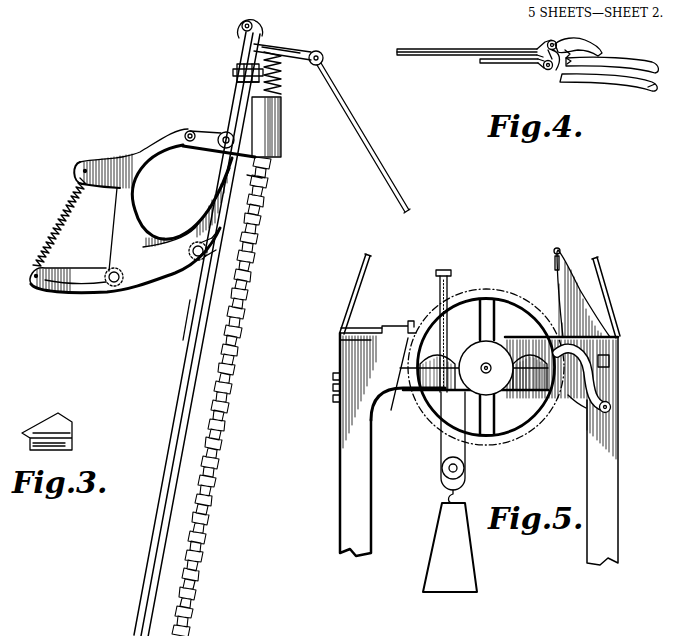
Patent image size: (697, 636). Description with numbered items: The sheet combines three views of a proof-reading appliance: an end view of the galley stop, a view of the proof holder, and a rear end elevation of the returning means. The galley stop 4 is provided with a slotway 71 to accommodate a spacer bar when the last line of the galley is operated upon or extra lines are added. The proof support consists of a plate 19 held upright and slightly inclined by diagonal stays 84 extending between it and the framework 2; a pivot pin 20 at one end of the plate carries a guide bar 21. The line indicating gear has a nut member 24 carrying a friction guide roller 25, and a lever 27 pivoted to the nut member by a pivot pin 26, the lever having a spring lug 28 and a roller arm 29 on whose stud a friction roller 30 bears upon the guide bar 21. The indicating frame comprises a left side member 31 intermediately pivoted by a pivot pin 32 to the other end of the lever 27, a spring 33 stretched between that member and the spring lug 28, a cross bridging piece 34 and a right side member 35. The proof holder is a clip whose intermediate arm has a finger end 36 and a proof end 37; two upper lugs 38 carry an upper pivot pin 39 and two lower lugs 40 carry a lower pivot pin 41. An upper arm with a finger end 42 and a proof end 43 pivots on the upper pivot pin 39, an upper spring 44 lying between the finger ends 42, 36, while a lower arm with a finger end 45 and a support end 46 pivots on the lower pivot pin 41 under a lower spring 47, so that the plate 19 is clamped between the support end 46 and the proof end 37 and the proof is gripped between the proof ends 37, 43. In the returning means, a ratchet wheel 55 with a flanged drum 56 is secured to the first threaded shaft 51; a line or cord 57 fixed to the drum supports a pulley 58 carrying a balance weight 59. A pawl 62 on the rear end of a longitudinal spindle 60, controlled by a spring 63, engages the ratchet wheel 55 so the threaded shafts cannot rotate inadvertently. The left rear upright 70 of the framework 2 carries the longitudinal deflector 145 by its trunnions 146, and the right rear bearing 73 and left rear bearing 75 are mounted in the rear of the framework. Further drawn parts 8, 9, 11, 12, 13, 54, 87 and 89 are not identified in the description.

In FIG. 5, the framework 2 is at (475, 449).
In FIG. 3, the galley stop 4 is at (40, 438).
In FIG. 5, the galley stop 4 is at (395, 327).
In FIG. 3, the arm 8 is at (287, 60).
In FIG. 5, the bracket 9 is at (340, 333).
In FIG. 5, the plate 11 is at (340, 342).
In FIG. 5, the top plate 12 is at (368, 328).
In FIG. 5, the cam 13 is at (428, 374).
In FIG. 3, the plate 19 is at (228, 221).
In FIG. 3, the pivot pin 20 is at (242, 26).
In FIG. 3, the guide bar 21 is at (196, 332).
In FIG. 3, the nut member 24 is at (282, 147).
In FIG. 3, the friction guide roller 25 is at (222, 134).
In FIG. 3, the pivot pin 26 is at (186, 133).
In FIG. 3, the lever 27 is at (153, 156).
In FIG. 3, the spring lug 28 is at (90, 166).
In FIG. 3, the roller arm 29 is at (143, 247).
In FIG. 3, the friction roller 30 is at (197, 258).
In FIG. 3, the left side member 31 is at (68, 292).
In FIG. 3, the pivot pin 32 is at (113, 286).
In FIG. 3, the spring 33 is at (65, 227).
In FIG. 3, the cross bridging piece 34 is at (247, 178).
In FIG. 3, the right side member 35 is at (205, 236).
In FIG. 3, the finger end 36 is at (237, 80).
In FIG. 4, the finger end 36 is at (645, 63).
In FIG. 4, the proof end 37 is at (415, 56).
In FIG. 4, the upper lugs 38 is at (540, 48).
In FIG. 3, the upper pivot pin 39 is at (237, 64).
In FIG. 4, the upper pivot pin 39 is at (551, 42).
In FIG. 4, the lower lugs 40 is at (547, 68).
In FIG. 3, the lower pivot pin 41 is at (290, 49).
In FIG. 4, the lower pivot pin 41 is at (552, 71).
In FIG. 3, the finger end 42 is at (237, 73).
In FIG. 4, the finger end 42 is at (590, 37).
In FIG. 4, the proof end 43 is at (423, 50).
In FIG. 4, the upper spring 44 is at (592, 55).
In FIG. 3, the finger end 45 is at (280, 96).
In FIG. 4, the finger end 45 is at (642, 90).
In FIG. 4, the support end 46 is at (490, 64).
In FIG. 4, the lower spring 47 is at (592, 86).
In FIG. 5, the first threaded shaft 51 is at (488, 368).
In FIG. 3, the chain 54 is at (217, 472).
In FIG. 5, the ratchet wheel 55 is at (514, 437).
In FIG. 5, the flanged boss or drum 56 is at (486, 368).
In FIG. 5, the line or cord 57 is at (440, 290).
In FIG. 5, the pulley 58 is at (441, 469).
In FIG. 5, the balance weight 59 is at (450, 547).
In FIG. 5, the longitudinal spindle 60 is at (610, 410).
In FIG. 5, the pawl 62 is at (572, 405).
In FIG. 5, the spring 63 is at (605, 373).
In FIG. 5, the left rear upright 70 is at (573, 270).
In FIG. 3, the slotway 71 is at (62, 441).
In FIG. 5, the right rear bearing 73 is at (437, 403).
In FIG. 5, the left rear bearing 75 is at (536, 355).
In FIG. 3, the diagonal stays 84 is at (370, 146).
In FIG. 5, the diagonal stays 84 is at (354, 278).
In FIG. 5, the axis line 87 is at (470, 378).
In FIG. 5, the pitch circle 89 is at (542, 412).
In FIG. 5, the longitudinal deflector 145 is at (553, 268).
In FIG. 5, the trunnions 146 is at (555, 249).